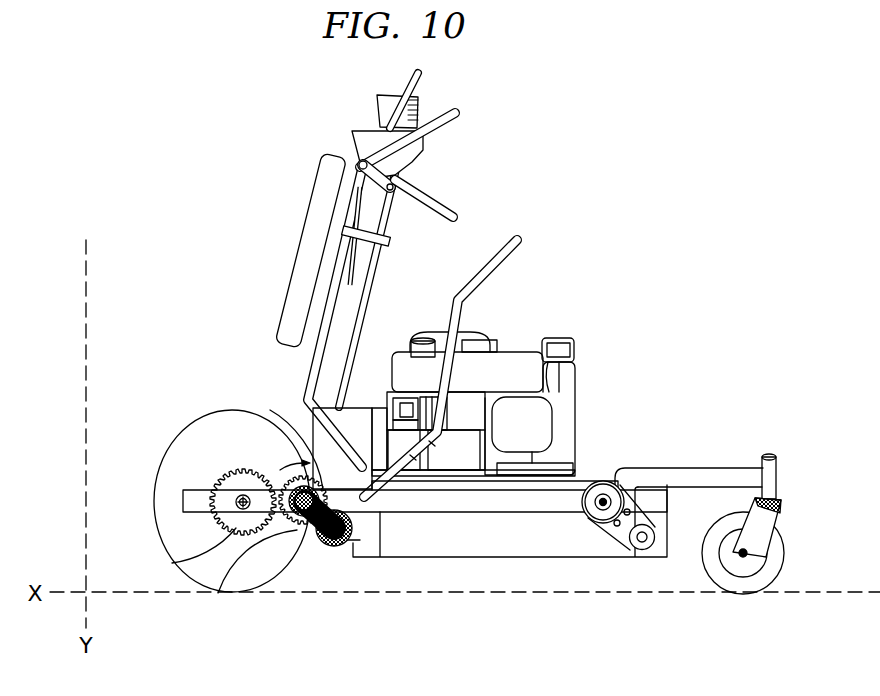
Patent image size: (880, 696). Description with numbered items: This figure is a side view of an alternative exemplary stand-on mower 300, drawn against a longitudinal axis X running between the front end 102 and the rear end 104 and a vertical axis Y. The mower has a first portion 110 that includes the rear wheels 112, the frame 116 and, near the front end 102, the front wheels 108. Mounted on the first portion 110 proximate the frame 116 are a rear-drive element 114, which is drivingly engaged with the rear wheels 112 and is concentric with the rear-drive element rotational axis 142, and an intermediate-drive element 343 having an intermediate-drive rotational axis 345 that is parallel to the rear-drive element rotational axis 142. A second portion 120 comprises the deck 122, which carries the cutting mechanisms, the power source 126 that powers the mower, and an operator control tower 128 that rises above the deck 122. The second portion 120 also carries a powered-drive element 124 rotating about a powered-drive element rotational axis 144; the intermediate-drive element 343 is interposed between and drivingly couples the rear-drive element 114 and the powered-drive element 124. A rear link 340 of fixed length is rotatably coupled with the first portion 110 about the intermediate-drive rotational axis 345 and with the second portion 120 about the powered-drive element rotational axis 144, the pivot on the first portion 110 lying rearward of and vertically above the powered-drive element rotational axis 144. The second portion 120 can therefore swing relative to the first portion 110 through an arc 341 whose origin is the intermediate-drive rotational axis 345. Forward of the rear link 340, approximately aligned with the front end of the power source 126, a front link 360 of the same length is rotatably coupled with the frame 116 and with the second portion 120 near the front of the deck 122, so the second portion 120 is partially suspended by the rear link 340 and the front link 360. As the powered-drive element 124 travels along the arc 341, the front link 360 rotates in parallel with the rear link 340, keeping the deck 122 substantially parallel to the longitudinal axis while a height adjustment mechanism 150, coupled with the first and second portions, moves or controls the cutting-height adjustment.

The stand-on mower 300 is at (551, 90).
The front end 102 is at (777, 400).
The rear end 104 is at (133, 495).
The front wheels 108 is at (773, 555).
The first portion 110 is at (300, 626).
The rear wheels 112 is at (168, 528).
The rear-drive element 114 is at (172, 563).
The frame 116 is at (698, 478).
The second portion 120 is at (563, 298).
The deck 122 is at (528, 540).
The powered-drive element 124 is at (348, 513).
The power source 126 is at (560, 417).
The operator control tower 128 is at (290, 172).
The rear-drive element rotational axis 142 is at (238, 501).
The powered-drive element rotational axis 144 is at (343, 545).
The height adjustment mechanism 150 is at (491, 225).
The rear link 340 is at (270, 410).
The arc 341 is at (218, 592).
The intermediate-drive element 343 is at (297, 537).
The intermediate-drive rotational axis 345 is at (282, 490).
The front link 360 is at (630, 533).